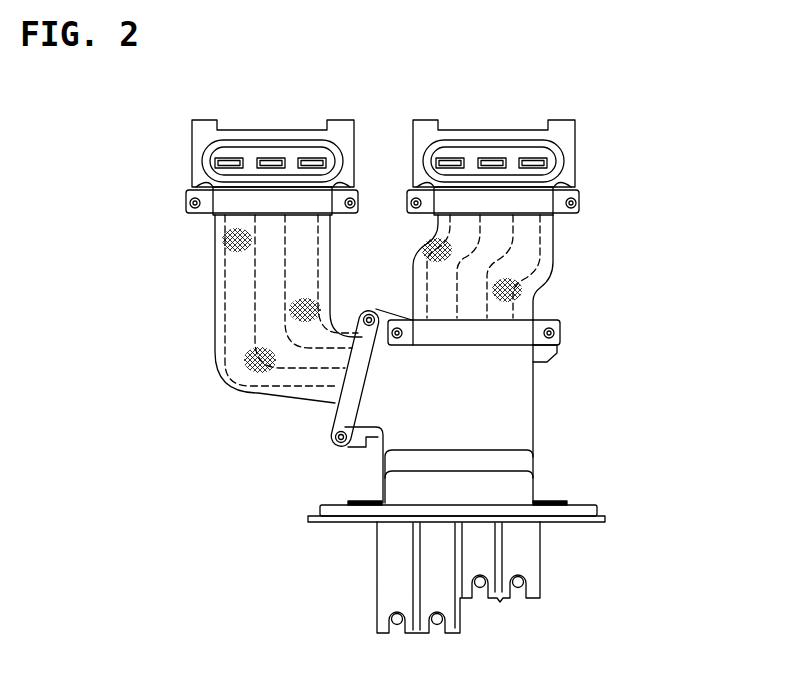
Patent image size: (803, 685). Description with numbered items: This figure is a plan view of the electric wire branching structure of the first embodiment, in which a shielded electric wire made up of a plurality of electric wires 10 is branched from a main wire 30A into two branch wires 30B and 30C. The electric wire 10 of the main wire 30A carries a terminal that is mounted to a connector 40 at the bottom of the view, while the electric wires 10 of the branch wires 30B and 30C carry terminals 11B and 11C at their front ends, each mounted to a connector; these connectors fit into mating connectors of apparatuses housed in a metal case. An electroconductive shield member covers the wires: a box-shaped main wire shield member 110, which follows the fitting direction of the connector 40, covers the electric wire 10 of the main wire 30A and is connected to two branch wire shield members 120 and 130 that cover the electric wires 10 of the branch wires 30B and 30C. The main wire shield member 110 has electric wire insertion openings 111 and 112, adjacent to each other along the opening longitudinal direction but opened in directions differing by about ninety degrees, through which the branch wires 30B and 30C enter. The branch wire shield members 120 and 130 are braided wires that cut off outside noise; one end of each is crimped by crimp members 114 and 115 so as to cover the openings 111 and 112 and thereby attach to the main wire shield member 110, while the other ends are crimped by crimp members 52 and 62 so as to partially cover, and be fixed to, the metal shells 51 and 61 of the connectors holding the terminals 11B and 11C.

The electric wire 10 is at (213, 280).
The terminal 11B is at (223, 158).
The terminal 11C is at (531, 158).
The main wire 30A is at (451, 403).
The branch wire 30B is at (220, 236).
The branch wire 30C is at (501, 195).
The connector 40 is at (339, 573).
The metal shell 51 is at (270, 140).
The crimp member 52 is at (187, 200).
The metal shell 61 is at (495, 140).
The crimp member 62 is at (578, 197).
The main wire shield member 110 is at (535, 397).
The electric wire insertion opening 111 is at (330, 393).
The electric wire insertion opening 112 is at (523, 310).
The crimp member 114 is at (333, 423).
The crimp member 115 is at (553, 357).
The branch wire shield member 120 is at (215, 323).
The branch wire shield member 130 is at (553, 260).